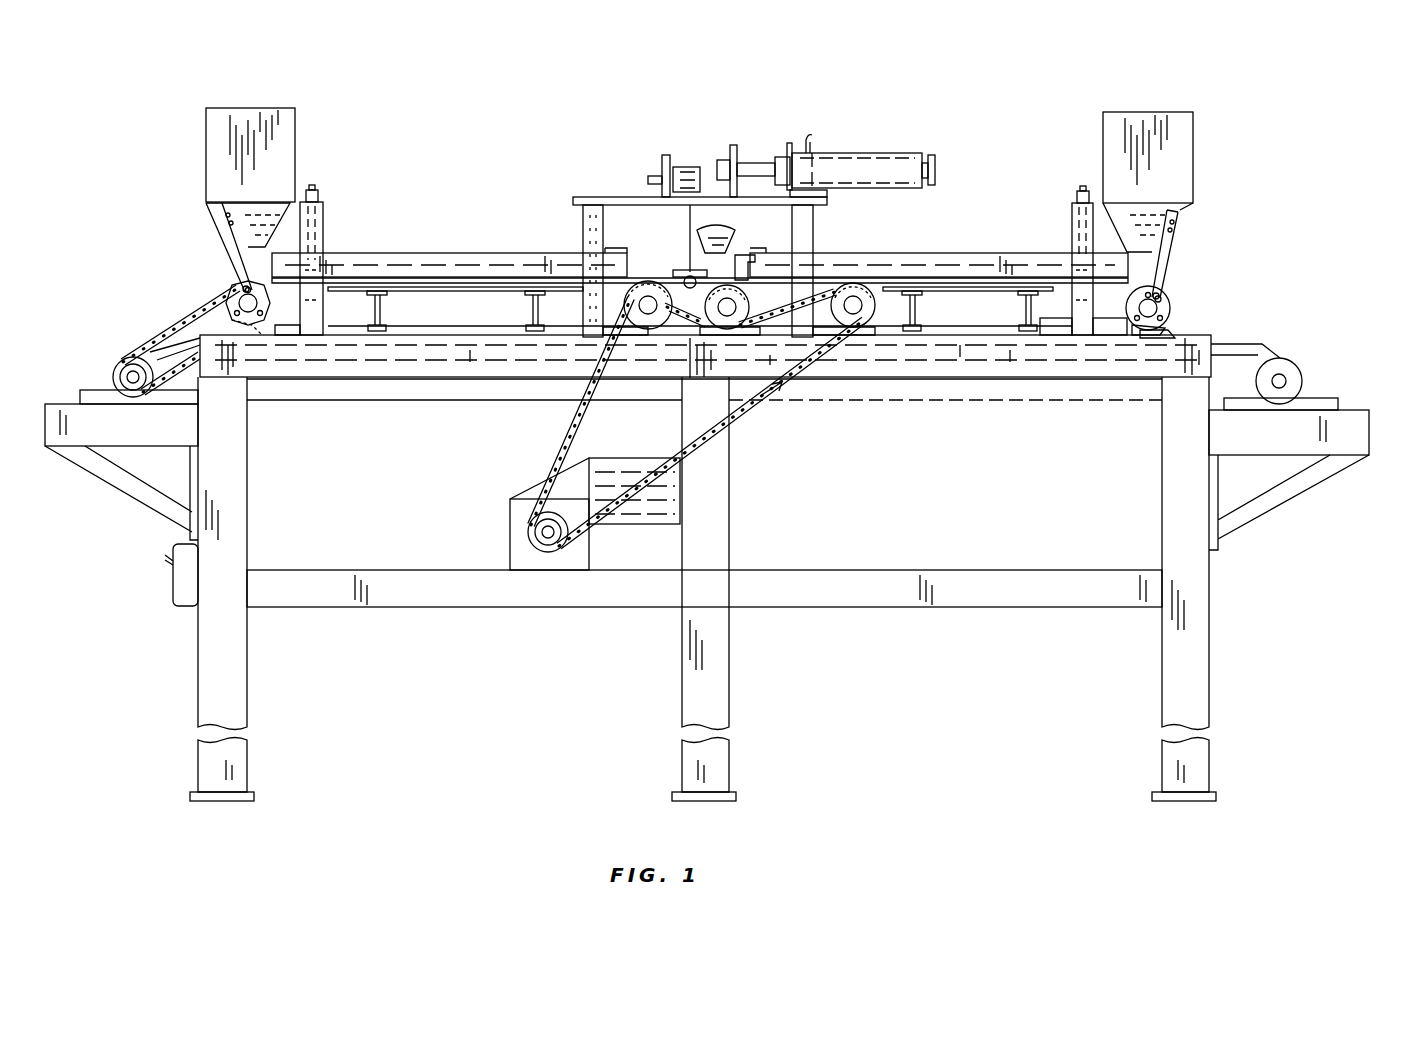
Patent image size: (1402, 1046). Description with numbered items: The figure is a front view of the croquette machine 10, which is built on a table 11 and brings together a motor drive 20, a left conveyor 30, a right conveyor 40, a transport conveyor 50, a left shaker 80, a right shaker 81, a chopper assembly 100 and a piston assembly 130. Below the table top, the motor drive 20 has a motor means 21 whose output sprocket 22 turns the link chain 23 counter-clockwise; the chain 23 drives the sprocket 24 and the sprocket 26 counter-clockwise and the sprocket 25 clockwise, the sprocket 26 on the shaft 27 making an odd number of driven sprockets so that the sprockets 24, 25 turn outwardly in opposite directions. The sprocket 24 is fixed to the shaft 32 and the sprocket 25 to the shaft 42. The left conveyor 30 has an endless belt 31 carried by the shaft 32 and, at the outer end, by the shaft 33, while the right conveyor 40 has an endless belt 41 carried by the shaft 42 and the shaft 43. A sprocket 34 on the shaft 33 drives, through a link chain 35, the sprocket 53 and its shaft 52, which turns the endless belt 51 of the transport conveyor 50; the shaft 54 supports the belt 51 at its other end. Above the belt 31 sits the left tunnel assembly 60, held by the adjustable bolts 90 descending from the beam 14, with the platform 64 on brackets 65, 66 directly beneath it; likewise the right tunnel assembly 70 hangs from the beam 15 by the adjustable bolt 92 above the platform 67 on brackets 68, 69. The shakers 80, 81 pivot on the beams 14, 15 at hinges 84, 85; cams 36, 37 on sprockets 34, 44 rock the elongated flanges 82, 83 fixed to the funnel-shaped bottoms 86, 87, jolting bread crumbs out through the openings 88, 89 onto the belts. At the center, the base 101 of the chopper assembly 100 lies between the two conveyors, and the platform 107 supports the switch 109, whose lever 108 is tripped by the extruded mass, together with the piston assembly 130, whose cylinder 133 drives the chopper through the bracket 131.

The croquette machine 10 is at (1283, 198).
The table 11 is at (1211, 668).
The beam 14 is at (324, 205).
The beam 15 is at (1072, 207).
The motor drive 20 is at (612, 540).
The motor means 21 is at (512, 500).
The output sprocket 22 is at (528, 532).
The link chain 23 is at (575, 442).
The sprocket 24 is at (637, 332).
The sprocket 25 is at (700, 340).
The sprocket 26 is at (860, 332).
The shaft 27 is at (868, 305).
The left conveyor 30 is at (640, 283).
The endless belt 31 is at (325, 290).
The shaft 32 is at (625, 305).
The shaft 33 is at (218, 303).
The sprocket 34 is at (212, 318).
The link chain 35 is at (170, 332).
The cams 36 is at (262, 300).
The cams 37 is at (1172, 312).
The right conveyor 40 is at (1110, 315).
The endless belt 41 is at (1052, 292).
The shaft 42 is at (740, 307).
The shaft 43 is at (1162, 314).
The sprocket 44 is at (1160, 298).
The transport conveyor 50 is at (1052, 402).
The endless belt 51 is at (962, 400).
The shaft 52 is at (127, 380).
The sprocket 53 is at (120, 363).
The shaft 54 is at (1283, 380).
The left tunnel assembly 60 is at (425, 253).
The platform 64 is at (470, 292).
The bracket 65 is at (382, 300).
The bracket 66 is at (530, 308).
The platform 67 is at (952, 294).
The bracket 68 is at (1023, 307).
The bracket 69 is at (917, 294).
The right tunnel assembly 70 is at (955, 255).
The left shaker 80 is at (273, 102).
The right shaker 81 is at (1180, 110).
The elongated flange 82 is at (232, 255).
The elongated flange 83 is at (1165, 268).
The hinge 84 is at (298, 202).
The hinge 85 is at (1095, 203).
The bottom 86 is at (207, 215).
The bottom 87 is at (1192, 222).
The opening 88 is at (240, 270).
The opening 89 is at (1143, 276).
The adjustable bolts 90 is at (324, 220).
The adjustable bolt 92 is at (1072, 222).
The chopper assembly 100 is at (718, 228).
The base 101 is at (675, 272).
The platform 107 is at (625, 178).
The lever 108 is at (690, 240).
The switch 109 is at (690, 165).
The piston assembly 130 is at (828, 143).
The bracket 131 is at (734, 145).
The cylinder 133 is at (850, 153).